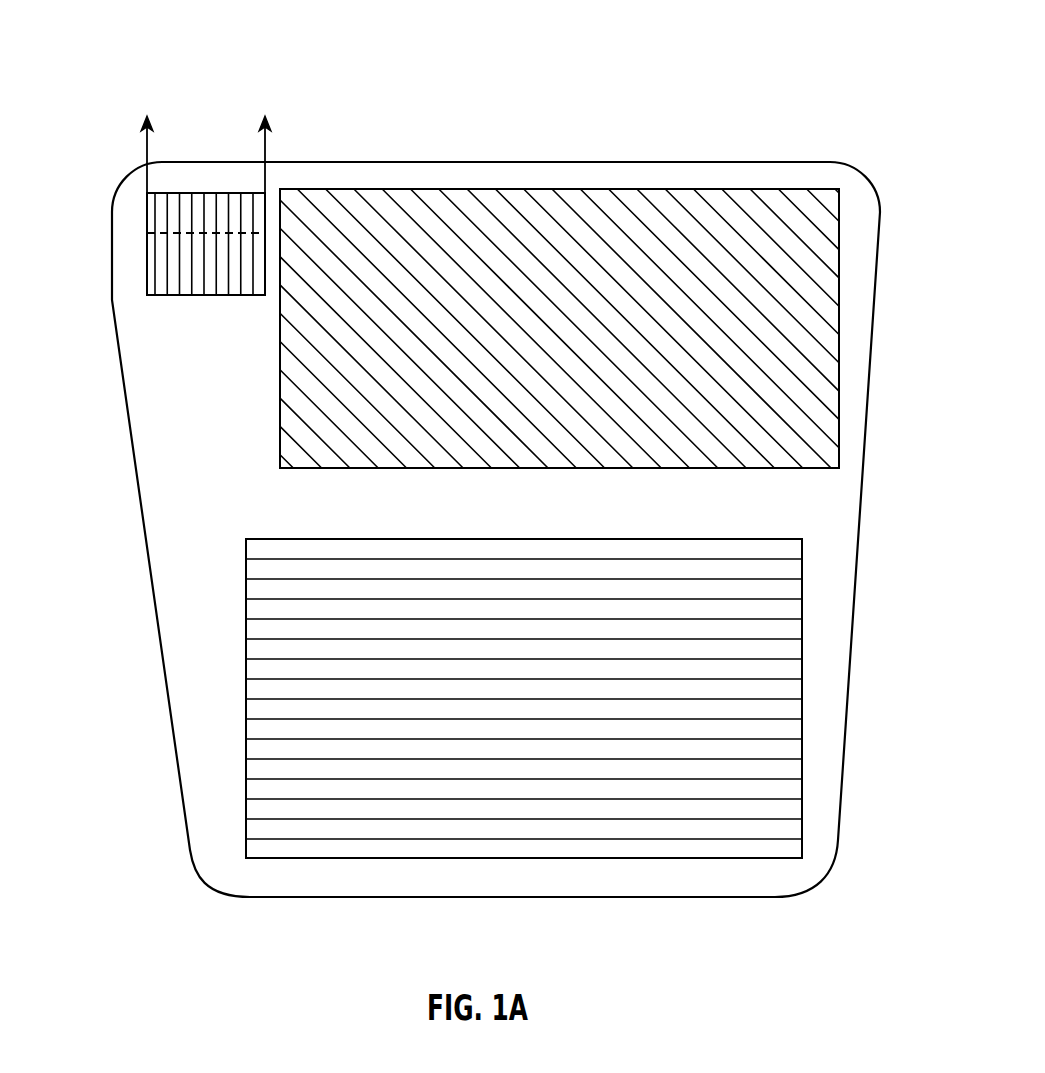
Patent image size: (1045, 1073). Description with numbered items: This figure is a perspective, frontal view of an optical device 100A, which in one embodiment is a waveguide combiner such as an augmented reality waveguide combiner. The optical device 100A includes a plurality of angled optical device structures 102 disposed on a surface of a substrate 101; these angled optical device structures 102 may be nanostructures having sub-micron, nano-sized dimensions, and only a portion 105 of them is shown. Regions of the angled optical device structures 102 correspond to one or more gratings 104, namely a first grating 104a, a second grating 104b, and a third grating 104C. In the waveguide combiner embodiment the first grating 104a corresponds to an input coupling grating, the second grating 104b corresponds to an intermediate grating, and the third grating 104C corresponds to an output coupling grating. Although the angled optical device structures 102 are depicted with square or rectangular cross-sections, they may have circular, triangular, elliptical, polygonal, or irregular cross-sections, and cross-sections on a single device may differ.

The optical device 100A is at (810, 53).
The substrate 101 is at (848, 500).
The angled optical device structures 102 is at (200, 290).
The gratings 104 is at (256, 293).
The first grating 104a is at (150, 295).
The second grating 104b is at (281, 432).
The third grating 104C is at (530, 541).
The portion of the plurality of angled optical device structures 105 is at (113, 73).